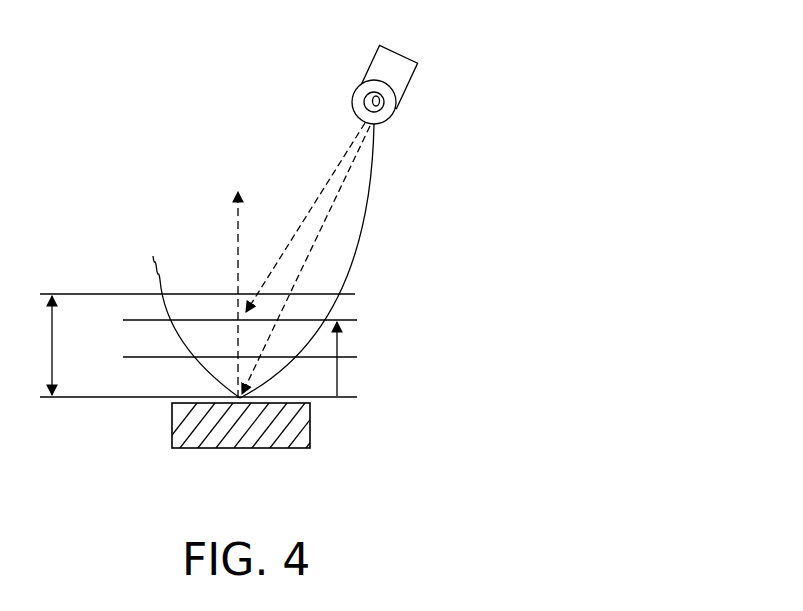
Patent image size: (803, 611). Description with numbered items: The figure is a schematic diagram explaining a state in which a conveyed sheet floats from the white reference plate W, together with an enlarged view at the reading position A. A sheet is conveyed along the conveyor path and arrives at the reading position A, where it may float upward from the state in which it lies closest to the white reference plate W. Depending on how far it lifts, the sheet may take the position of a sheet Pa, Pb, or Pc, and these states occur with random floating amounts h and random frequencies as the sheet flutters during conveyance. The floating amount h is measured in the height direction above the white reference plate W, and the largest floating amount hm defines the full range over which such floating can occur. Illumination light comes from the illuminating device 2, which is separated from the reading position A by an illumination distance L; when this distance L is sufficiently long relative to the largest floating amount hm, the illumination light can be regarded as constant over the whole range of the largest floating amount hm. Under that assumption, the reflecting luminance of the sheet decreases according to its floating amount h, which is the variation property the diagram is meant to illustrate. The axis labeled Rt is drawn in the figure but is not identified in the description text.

The illuminating device 2 is at (406, 74).
The white reference plate W is at (266, 427).
The reading position A is at (191, 314).
The illumination distance L is at (310, 261).
The reference axis (normal direction) Rt is at (240, 279).
The sheet Pa is at (239, 389).
The sheet Pb is at (281, 350).
The sheet Pc is at (280, 312).
The floating amount h is at (346, 359).
The largest floating amount hm is at (32, 345).